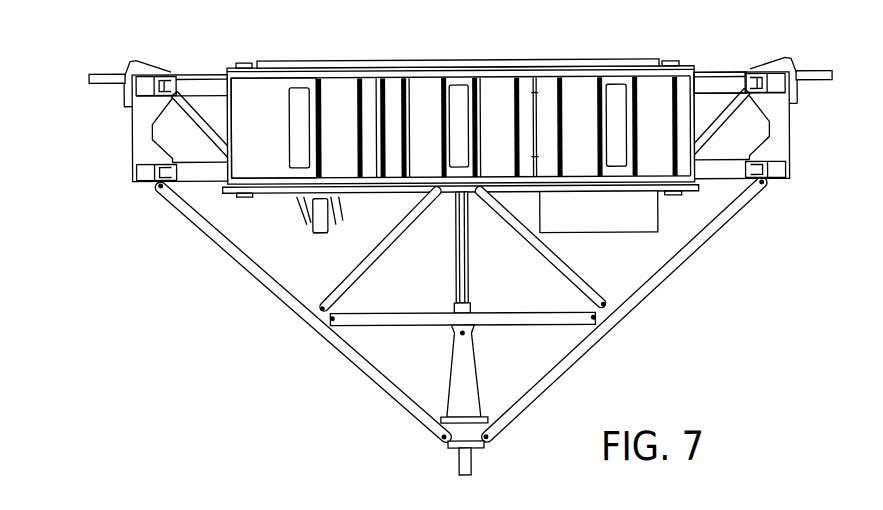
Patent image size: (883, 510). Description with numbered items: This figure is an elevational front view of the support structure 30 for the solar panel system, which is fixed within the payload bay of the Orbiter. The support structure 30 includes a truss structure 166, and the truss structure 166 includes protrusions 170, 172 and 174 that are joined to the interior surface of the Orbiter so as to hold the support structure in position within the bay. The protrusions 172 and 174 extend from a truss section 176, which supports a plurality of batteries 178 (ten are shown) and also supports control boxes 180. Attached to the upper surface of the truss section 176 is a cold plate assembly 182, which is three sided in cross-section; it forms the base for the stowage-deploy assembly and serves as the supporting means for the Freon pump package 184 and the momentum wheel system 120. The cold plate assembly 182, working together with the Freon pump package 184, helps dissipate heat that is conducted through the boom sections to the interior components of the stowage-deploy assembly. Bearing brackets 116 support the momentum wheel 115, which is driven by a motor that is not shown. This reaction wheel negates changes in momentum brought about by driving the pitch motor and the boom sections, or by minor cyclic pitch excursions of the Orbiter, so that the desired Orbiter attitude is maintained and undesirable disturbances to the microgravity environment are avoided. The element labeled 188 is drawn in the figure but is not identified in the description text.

The support structure 30 is at (207, 73).
The momentum wheel 115 is at (311, 242).
The bearing brackets 116 is at (293, 200).
The momentum wheel system 120 is at (340, 198).
The truss structure 166 is at (207, 226).
The protrusion 170 is at (473, 463).
The protrusion 172 is at (105, 73).
The protrusion 174 is at (817, 70).
The truss section 176 is at (720, 82).
The batteries 178 is at (337, 110).
The control boxes 180 is at (297, 100).
The cold plate assembly 182 is at (277, 126).
The Freon pump package 184 is at (636, 238).
The mounting block 188 is at (313, 226).